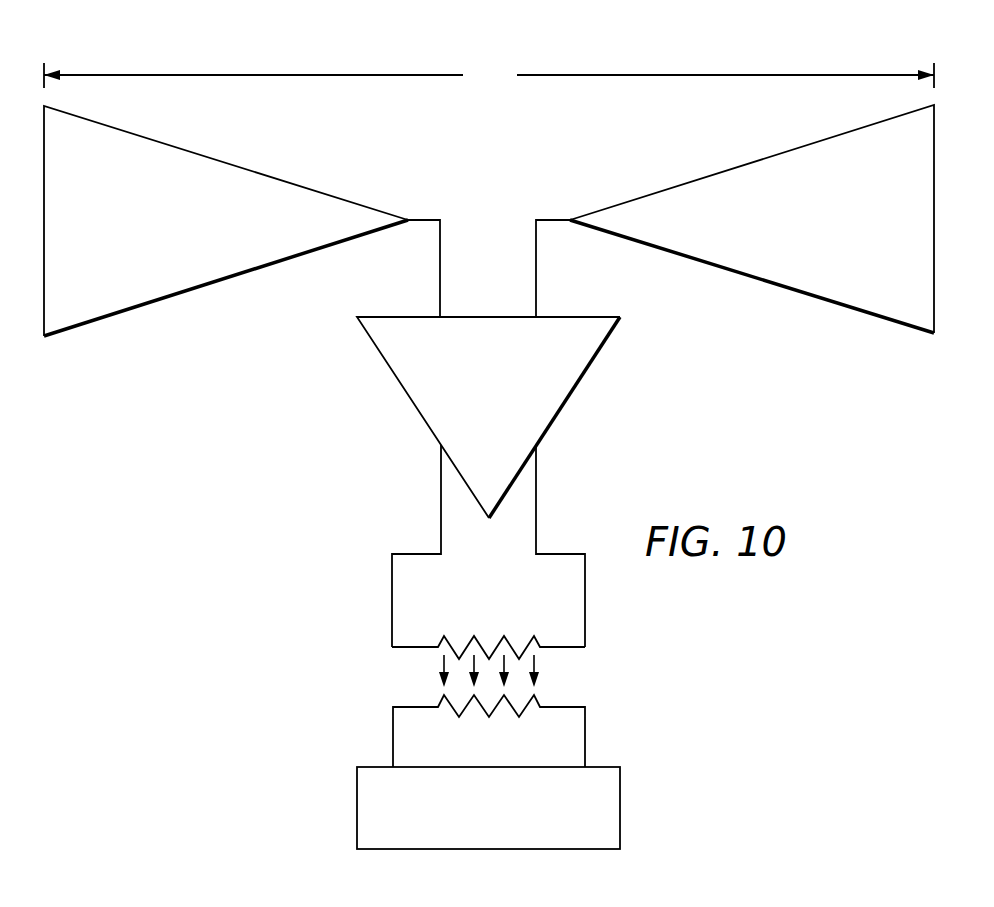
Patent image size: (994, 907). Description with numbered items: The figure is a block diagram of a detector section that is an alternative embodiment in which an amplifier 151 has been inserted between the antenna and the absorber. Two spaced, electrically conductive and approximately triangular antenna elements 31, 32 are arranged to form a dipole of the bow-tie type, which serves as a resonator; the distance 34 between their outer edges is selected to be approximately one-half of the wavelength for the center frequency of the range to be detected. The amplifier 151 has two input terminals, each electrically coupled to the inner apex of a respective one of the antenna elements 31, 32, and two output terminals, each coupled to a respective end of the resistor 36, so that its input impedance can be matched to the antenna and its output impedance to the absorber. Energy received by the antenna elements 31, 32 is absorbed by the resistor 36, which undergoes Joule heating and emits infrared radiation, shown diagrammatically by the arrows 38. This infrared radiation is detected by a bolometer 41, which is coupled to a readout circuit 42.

The antenna element 31 is at (207, 171).
The antenna element 32 is at (770, 168).
The distance 34 is at (676, 75).
The resistor 36 is at (490, 645).
The arrows 38 is at (441, 665).
The infrared detector 41 is at (538, 697).
The readout circuit 42 is at (620, 811).
The amplifier 151 is at (556, 423).